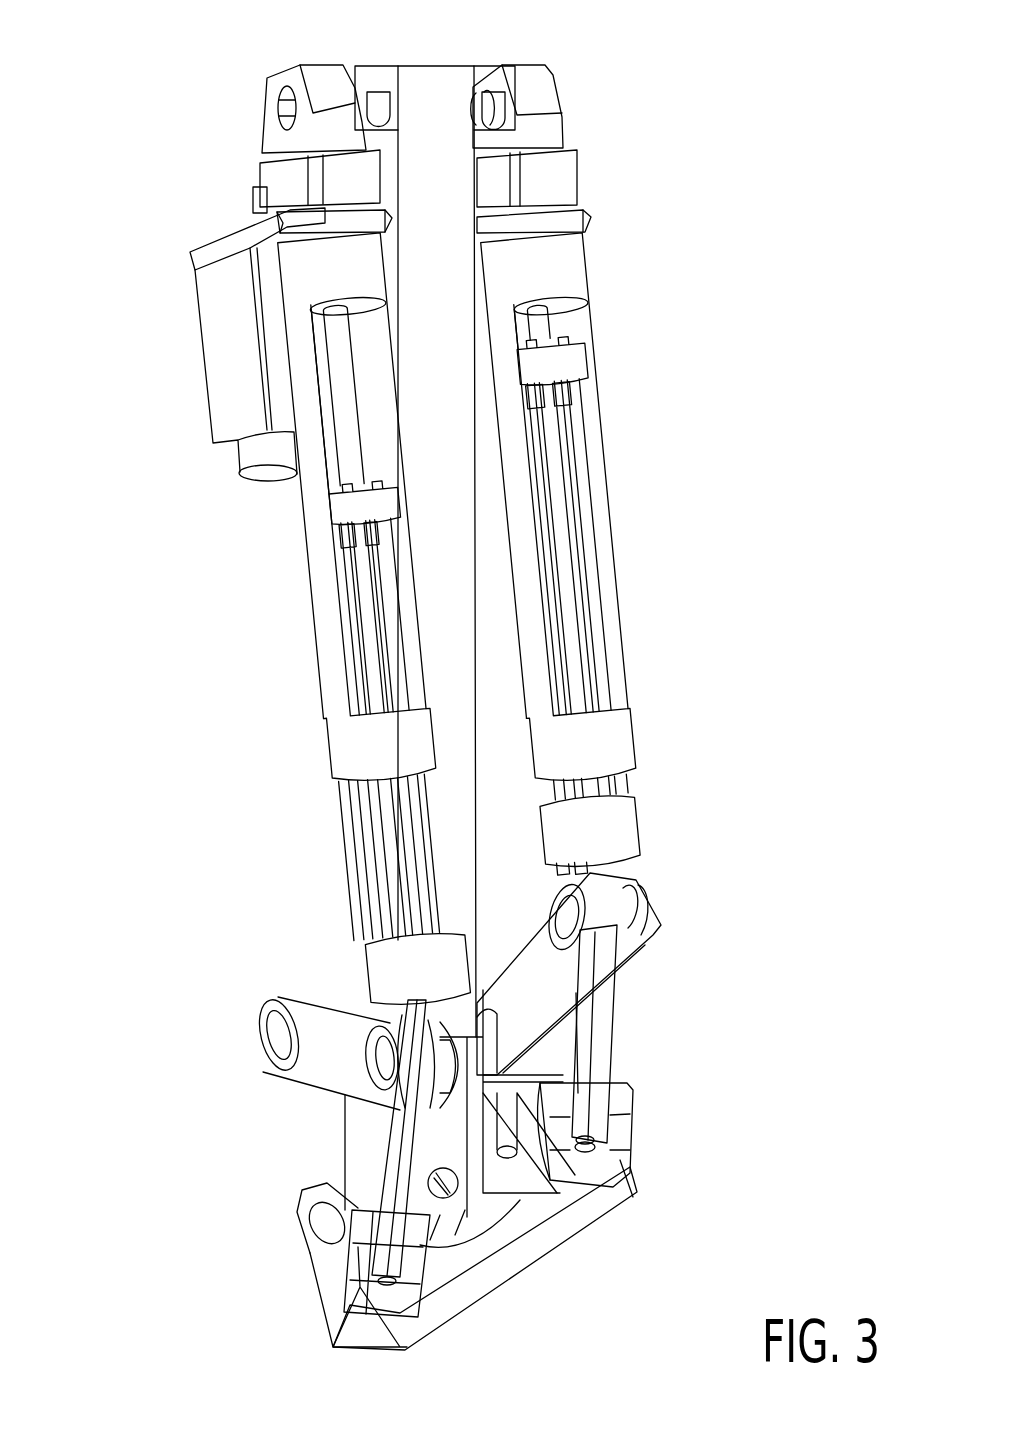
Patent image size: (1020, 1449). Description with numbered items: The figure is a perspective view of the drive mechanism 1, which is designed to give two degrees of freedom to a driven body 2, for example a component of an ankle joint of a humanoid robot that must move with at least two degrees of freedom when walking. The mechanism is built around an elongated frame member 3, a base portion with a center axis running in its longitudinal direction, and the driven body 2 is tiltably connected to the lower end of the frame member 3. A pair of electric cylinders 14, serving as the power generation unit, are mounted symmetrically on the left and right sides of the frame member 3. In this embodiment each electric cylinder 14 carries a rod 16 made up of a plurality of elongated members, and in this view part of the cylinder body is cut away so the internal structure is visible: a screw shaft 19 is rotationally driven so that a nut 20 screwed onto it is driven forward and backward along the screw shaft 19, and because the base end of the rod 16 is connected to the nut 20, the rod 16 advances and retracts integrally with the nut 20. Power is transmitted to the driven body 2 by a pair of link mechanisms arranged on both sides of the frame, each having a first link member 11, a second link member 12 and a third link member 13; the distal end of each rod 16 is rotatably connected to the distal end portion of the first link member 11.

The drive mechanism 1 is at (128, 108).
The driven body 2 is at (515, 1262).
The frame member 3 is at (425, 80).
The first link member 11 is at (315, 1020).
The second link member 12 is at (608, 1043).
The third link member 13 is at (620, 1130).
The electric cylinder 14 is at (610, 540).
The rod 16 is at (367, 853).
The screw shaft 19 is at (540, 327).
The nut 20 is at (572, 360).